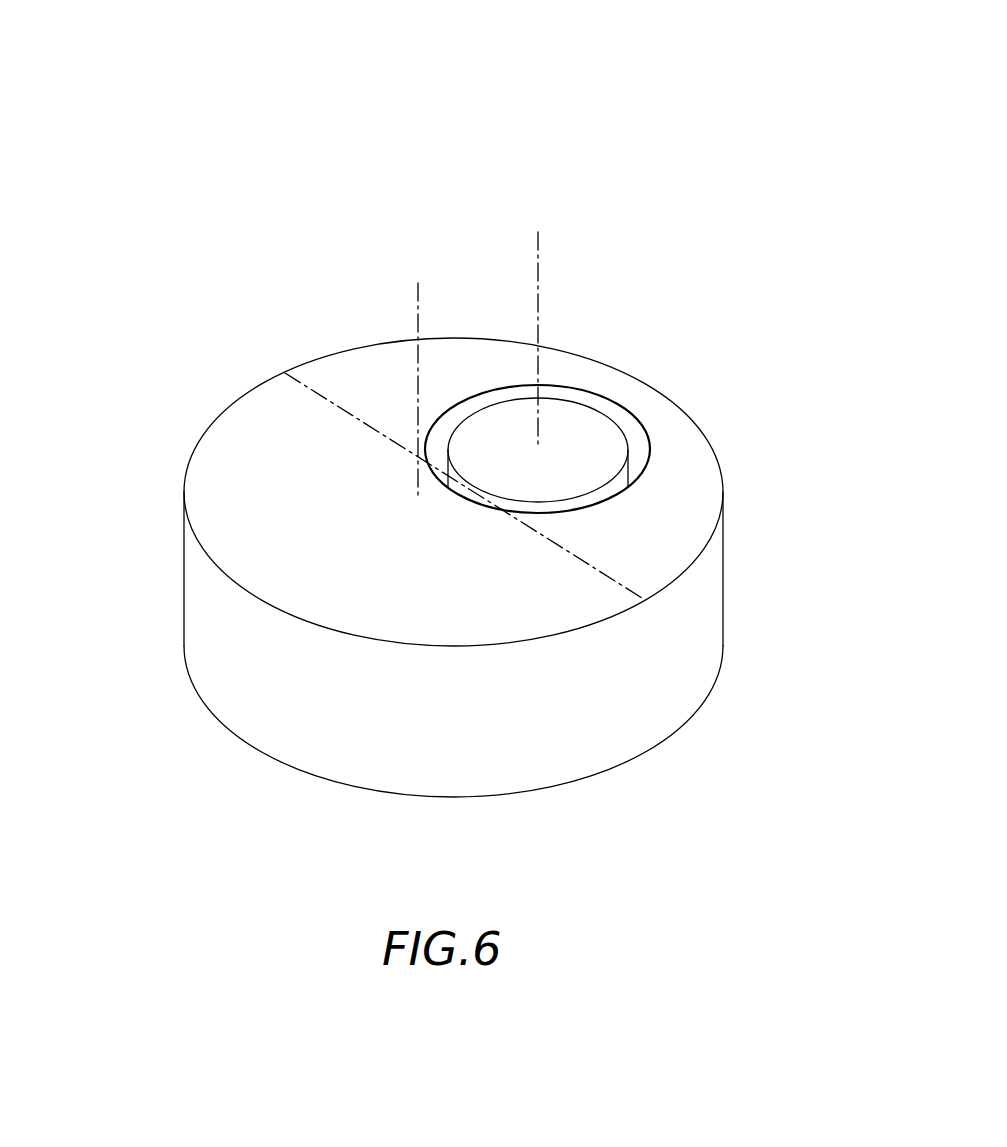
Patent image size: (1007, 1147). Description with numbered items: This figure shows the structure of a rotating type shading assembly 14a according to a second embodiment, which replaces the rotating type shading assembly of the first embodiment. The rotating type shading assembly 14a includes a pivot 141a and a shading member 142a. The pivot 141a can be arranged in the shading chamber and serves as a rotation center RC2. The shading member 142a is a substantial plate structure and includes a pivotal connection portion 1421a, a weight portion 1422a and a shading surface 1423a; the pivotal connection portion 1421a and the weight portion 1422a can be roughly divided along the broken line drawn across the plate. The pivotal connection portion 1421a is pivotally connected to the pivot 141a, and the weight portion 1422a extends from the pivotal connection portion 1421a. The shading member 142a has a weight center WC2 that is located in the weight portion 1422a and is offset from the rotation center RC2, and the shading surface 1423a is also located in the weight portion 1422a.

The rotating type shading assembly 14a is at (755, 122).
The shading member 142a is at (693, 305).
The pivot 141a is at (505, 438).
The pivotal connection portion 1421a is at (683, 457).
The weight portion 1422a is at (245, 442).
The shading surface 1423a is at (215, 683).
The weight center WC2 is at (418, 348).
The rotation center RC2 is at (540, 298).